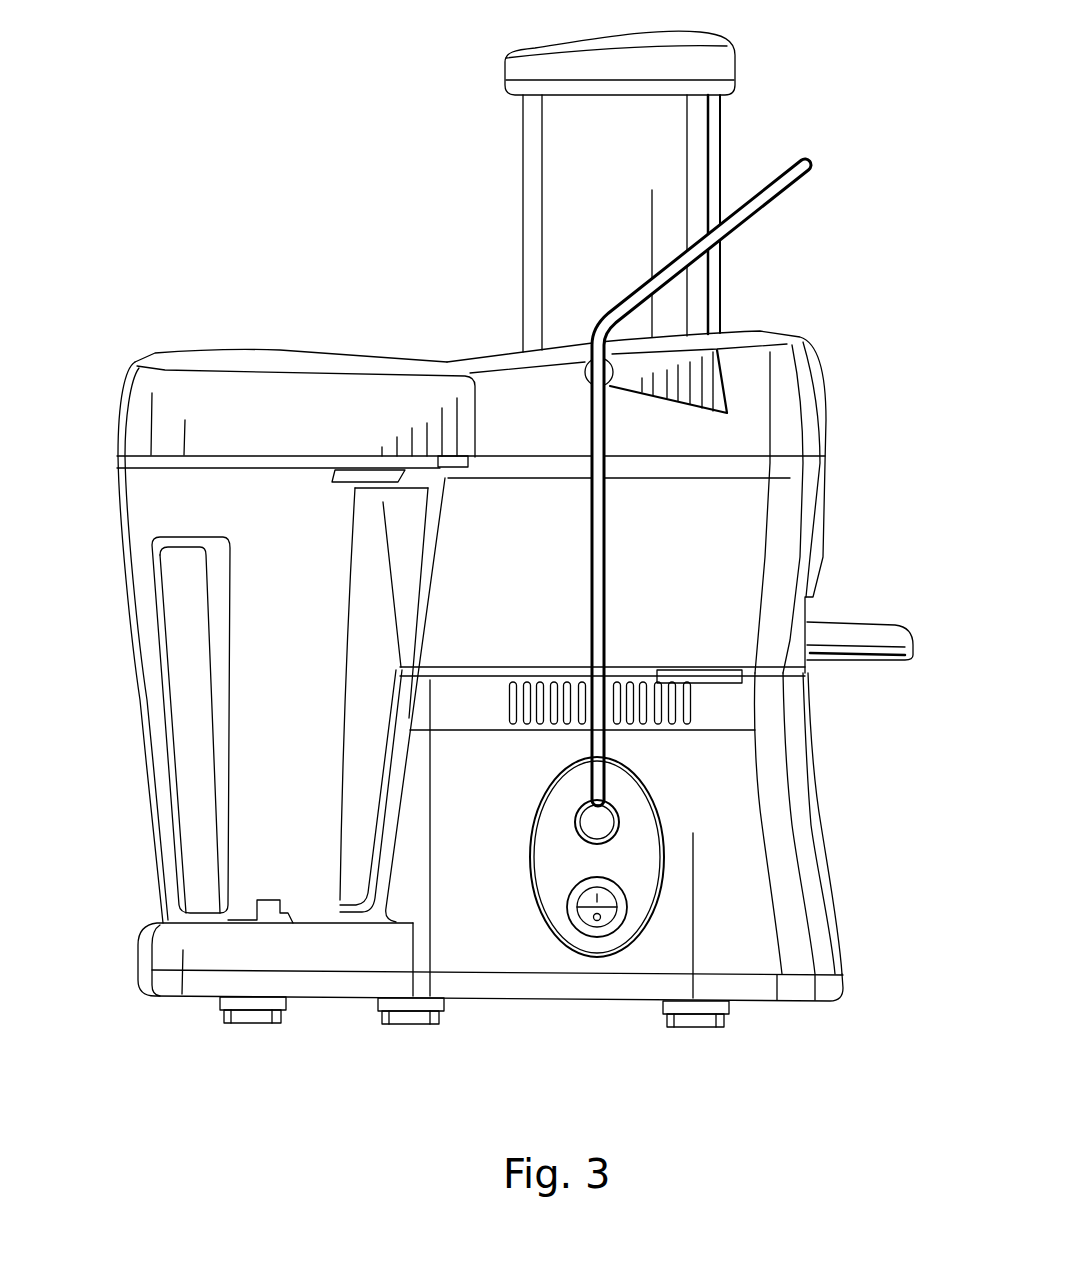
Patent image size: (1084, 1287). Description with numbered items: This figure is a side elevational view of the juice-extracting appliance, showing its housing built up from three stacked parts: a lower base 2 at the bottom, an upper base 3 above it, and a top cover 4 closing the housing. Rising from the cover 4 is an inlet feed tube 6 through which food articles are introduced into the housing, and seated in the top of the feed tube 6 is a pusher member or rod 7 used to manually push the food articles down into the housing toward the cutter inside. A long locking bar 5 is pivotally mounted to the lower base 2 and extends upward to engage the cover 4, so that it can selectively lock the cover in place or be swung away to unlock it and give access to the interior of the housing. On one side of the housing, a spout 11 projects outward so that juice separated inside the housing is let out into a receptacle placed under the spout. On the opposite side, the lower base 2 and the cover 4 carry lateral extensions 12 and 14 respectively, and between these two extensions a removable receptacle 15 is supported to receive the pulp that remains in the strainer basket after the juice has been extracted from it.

The lower base 2 is at (835, 892).
The upper base 3 is at (810, 523).
The top cover 4 is at (813, 393).
The locking bar 5 is at (813, 163).
The inlet feed tube 6 is at (700, 157).
The pusher member or rod 7 is at (717, 60).
The spout 11 is at (875, 657).
The lateral extension of the base 12 is at (160, 965).
The lateral extension of the cover 14 is at (121, 392).
The receptacle 15 is at (173, 753).